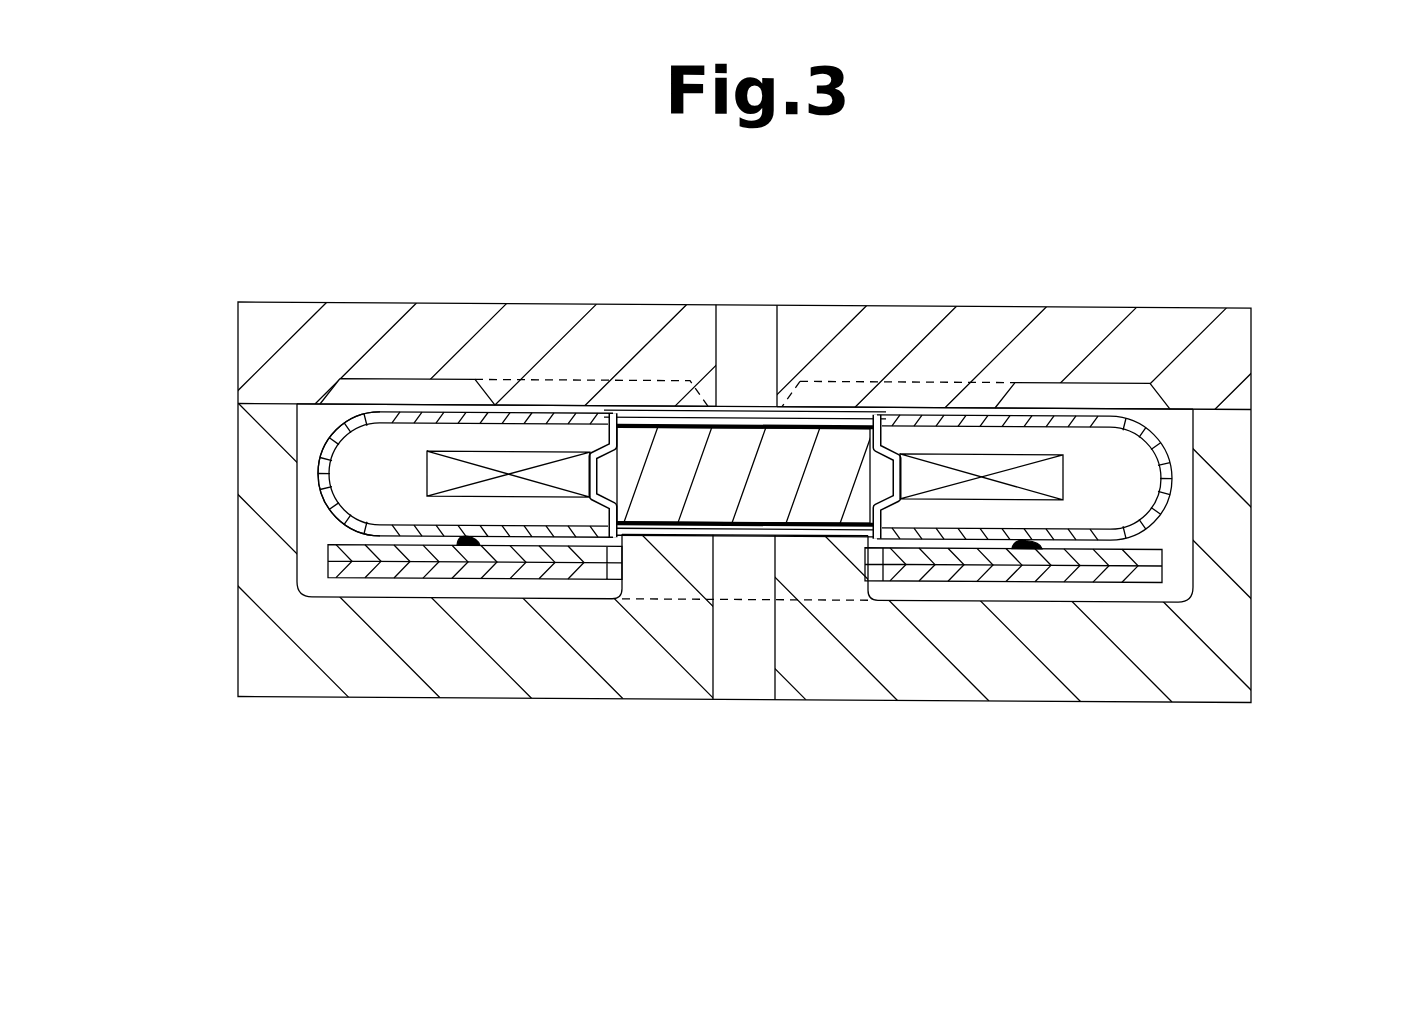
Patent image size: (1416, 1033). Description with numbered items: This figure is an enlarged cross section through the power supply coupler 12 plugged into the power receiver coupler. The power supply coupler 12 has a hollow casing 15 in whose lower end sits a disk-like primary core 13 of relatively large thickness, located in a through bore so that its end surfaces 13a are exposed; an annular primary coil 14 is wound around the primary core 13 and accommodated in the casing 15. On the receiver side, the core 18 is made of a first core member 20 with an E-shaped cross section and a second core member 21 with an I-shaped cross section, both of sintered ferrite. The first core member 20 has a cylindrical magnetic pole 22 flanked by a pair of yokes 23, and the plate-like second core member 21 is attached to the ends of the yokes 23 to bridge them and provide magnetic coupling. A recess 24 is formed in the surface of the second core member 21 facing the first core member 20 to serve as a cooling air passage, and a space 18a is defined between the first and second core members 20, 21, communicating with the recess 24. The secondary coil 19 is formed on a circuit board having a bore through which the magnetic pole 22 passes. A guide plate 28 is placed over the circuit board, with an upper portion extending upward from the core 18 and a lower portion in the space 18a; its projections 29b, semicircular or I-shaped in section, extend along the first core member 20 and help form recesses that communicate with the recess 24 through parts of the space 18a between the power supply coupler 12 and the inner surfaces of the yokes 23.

The power supply coupler 12 is at (324, 500).
The primary core 13 is at (748, 445).
The end surfaces 13a is at (833, 404).
The primary coil 14 is at (1063, 470).
The hollow casing 15 is at (1162, 511).
The core 18 is at (1340, 362).
The space 18a is at (335, 417).
The secondary coil 19 is at (960, 578).
The first core member 20 is at (1248, 454).
The second core member 21 is at (1248, 366).
The magnetic pole 22 is at (702, 557).
The yokes 23 is at (247, 572).
The recess 24 is at (397, 391).
The guide plate 28 is at (407, 554).
The projections 29b is at (483, 541).